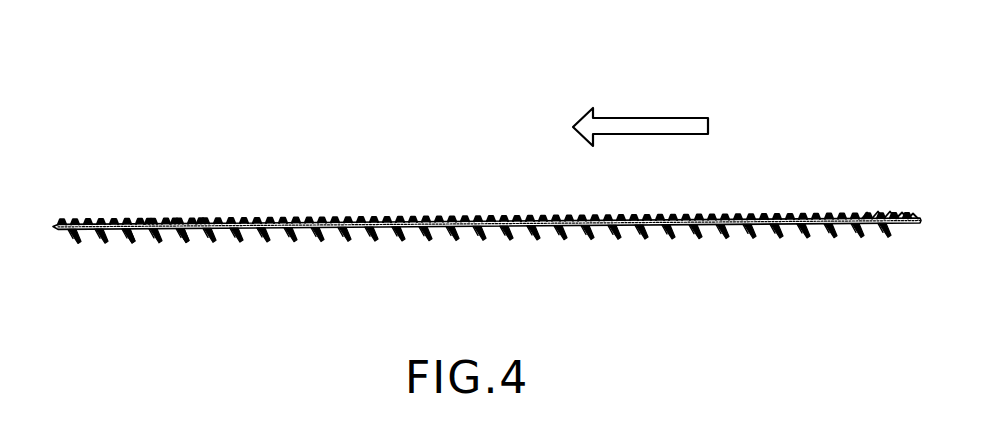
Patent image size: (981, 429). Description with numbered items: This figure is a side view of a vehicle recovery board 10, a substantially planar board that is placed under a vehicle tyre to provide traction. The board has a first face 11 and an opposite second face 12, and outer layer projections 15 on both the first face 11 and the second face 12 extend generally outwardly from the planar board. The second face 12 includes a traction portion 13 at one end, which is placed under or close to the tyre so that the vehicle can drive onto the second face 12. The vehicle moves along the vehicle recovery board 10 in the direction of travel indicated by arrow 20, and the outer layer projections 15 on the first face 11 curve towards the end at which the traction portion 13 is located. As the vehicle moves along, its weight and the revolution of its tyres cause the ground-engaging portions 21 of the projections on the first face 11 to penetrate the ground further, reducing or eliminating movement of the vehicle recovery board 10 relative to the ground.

The vehicle recovery board 10 is at (116, 174).
The first face 11 is at (650, 232).
The second face 12 is at (432, 215).
The traction portion 13 is at (891, 204).
The outer layer projections 15 is at (199, 213).
The arrow 20 is at (650, 118).
The ground-engaging portions 21 is at (447, 243).